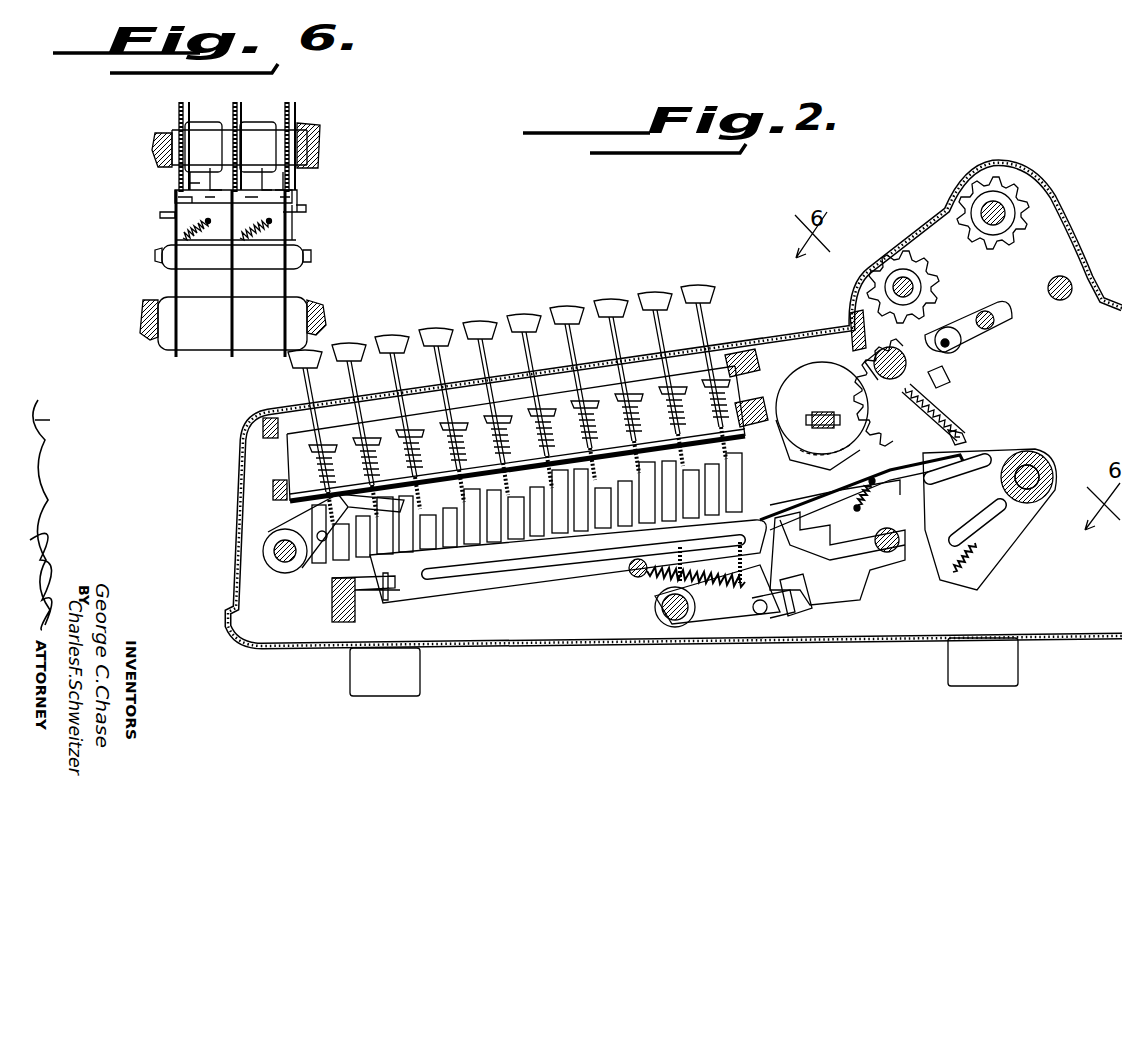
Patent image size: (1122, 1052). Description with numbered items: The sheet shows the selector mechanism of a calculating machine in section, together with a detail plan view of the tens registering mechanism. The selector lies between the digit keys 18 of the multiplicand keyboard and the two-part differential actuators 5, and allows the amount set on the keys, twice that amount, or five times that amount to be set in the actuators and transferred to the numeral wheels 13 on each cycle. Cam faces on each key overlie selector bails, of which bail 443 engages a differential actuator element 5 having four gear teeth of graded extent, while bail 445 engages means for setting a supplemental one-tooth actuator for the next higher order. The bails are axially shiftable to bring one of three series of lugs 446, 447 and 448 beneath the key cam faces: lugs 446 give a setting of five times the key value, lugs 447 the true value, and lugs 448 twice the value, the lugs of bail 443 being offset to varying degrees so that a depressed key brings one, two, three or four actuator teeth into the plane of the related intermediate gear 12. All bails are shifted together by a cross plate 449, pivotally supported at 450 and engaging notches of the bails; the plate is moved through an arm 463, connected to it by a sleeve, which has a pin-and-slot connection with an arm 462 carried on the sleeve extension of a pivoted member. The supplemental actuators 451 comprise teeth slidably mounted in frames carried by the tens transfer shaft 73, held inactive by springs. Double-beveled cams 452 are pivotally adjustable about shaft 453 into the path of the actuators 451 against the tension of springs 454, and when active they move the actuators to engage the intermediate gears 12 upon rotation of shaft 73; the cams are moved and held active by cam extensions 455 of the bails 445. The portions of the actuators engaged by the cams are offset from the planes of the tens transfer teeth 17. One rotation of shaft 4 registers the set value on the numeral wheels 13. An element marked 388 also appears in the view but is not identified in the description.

In FIG. 6, the intermediate gear 12 is at (286, 110).
In FIG. 2, the intermediate gear 12 is at (878, 333).
In FIG. 6, the tens transfer teeth 17 is at (185, 197).
In FIG. 2, the tens transfer teeth 17 is at (948, 432).
In FIG. 6, the supplemental actuator 451 is at (190, 215).
In FIG. 2, the supplemental actuator 451 is at (947, 408).
In FIG. 6, the double-beveled cam 452 is at (278, 198).
In FIG. 2, the double-beveled cam 452 is at (940, 382).
In FIG. 6, the shaft 453 is at (311, 254).
In FIG. 2, the shaft 453 is at (893, 545).
In FIG. 6, the tens transfer shaft 73 is at (313, 312).
In FIG. 2, the tens transfer shaft 73 is at (1038, 478).
In FIG. 2, the gear 388 is at (977, 193).
In FIG. 2, the numeral wheel 13 is at (888, 268).
In FIG. 2, the two-part differential actuator 5 is at (812, 385).
In FIG. 2, the shaft 4 is at (826, 412).
In FIG. 2, the cam extension 455 is at (896, 465).
In FIG. 2, the digit key 18 is at (648, 300).
In FIG. 2, the lugs 448 is at (392, 533).
In FIG. 2, the lugs 447 is at (402, 513).
In FIG. 2, the lugs 446 is at (402, 513).
In FIG. 2, the selector bail 443 is at (468, 532).
In FIG. 2, the selector bail 445 is at (552, 545).
In FIG. 2, the cross plate 449 is at (668, 578).
In FIG. 2, the pivot 450 is at (675, 612).
In FIG. 2, the arm 463 is at (738, 617).
In FIG. 2, the arm 462 is at (790, 600).
In FIG. 2, the spring 454 is at (870, 520).